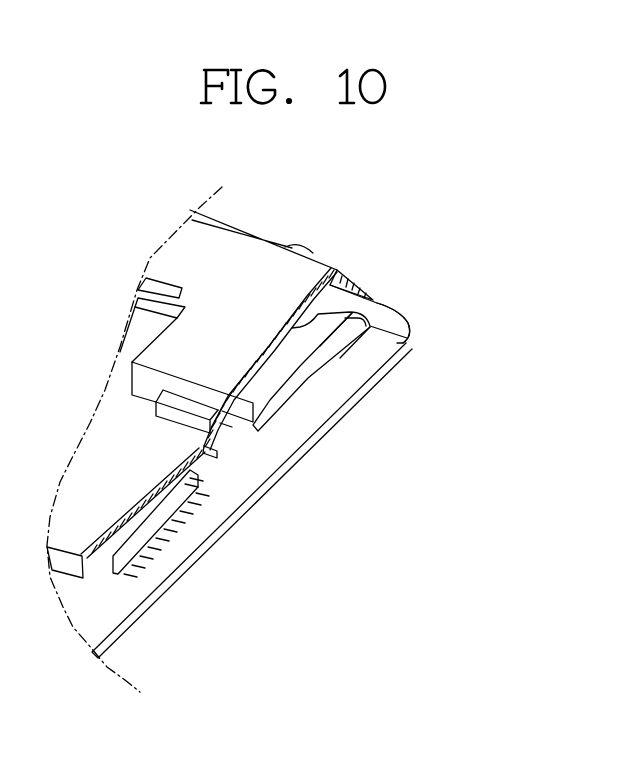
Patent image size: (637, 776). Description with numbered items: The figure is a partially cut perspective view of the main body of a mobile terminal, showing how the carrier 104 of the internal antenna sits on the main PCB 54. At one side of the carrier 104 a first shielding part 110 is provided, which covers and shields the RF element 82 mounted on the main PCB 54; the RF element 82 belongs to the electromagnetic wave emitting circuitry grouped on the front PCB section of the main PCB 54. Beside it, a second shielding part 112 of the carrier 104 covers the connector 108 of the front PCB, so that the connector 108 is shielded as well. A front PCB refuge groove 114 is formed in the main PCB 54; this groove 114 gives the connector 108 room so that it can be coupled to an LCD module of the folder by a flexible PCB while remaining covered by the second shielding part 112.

The main PCB 54 is at (255, 470).
The RF element 82 is at (160, 505).
The carrier 104 is at (366, 272).
The connector 108 is at (270, 392).
The first shielding part 110 is at (143, 550).
The second shielding part 112 is at (298, 345).
The front PCB refuge groove 114 is at (397, 330).